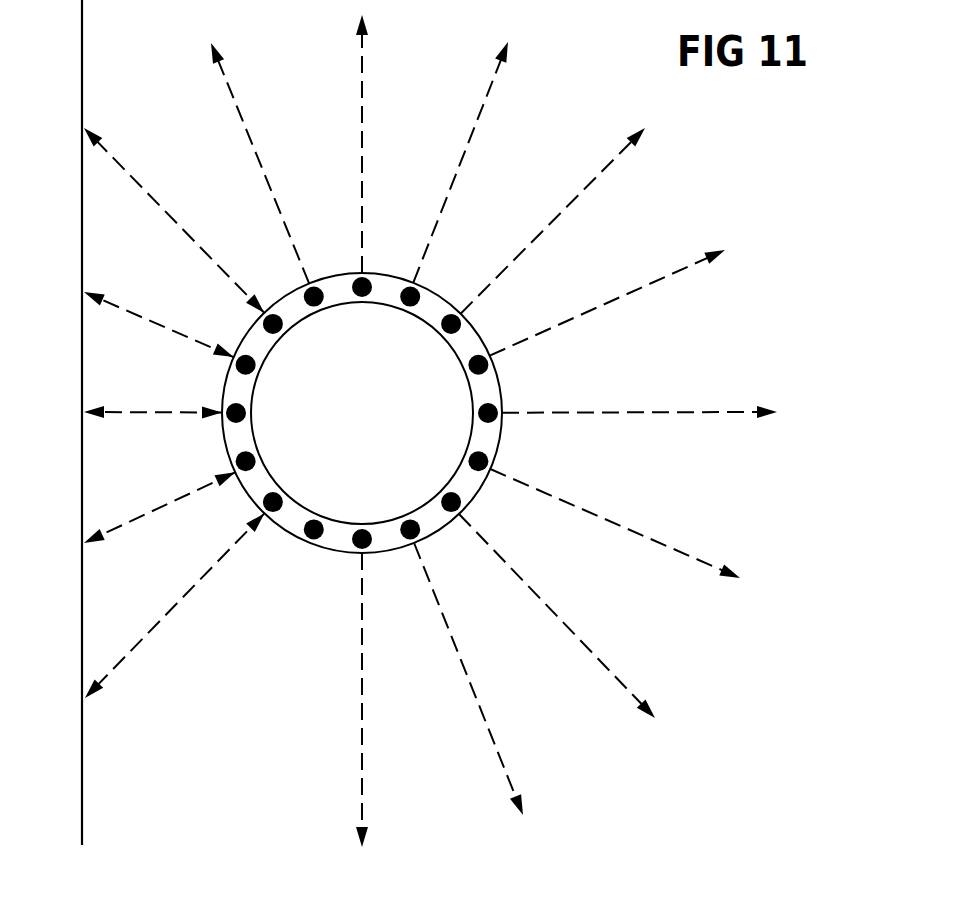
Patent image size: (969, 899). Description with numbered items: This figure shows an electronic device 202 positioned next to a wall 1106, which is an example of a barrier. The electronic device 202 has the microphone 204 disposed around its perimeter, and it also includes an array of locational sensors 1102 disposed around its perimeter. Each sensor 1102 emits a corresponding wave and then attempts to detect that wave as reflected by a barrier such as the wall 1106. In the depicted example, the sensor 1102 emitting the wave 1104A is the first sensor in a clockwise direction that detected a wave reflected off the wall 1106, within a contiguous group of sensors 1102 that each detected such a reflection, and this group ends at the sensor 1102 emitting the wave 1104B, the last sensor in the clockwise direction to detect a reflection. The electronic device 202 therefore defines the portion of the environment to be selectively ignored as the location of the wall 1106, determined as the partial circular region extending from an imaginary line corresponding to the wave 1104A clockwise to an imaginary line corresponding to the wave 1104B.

The electronic device 202 is at (362, 413).
The microphone 204 is at (387, 273).
The locational sensors 1102 is at (486, 362).
The wave 1104A is at (120, 659).
The wave 1104B is at (138, 190).
The wall 1106 is at (82, 226).